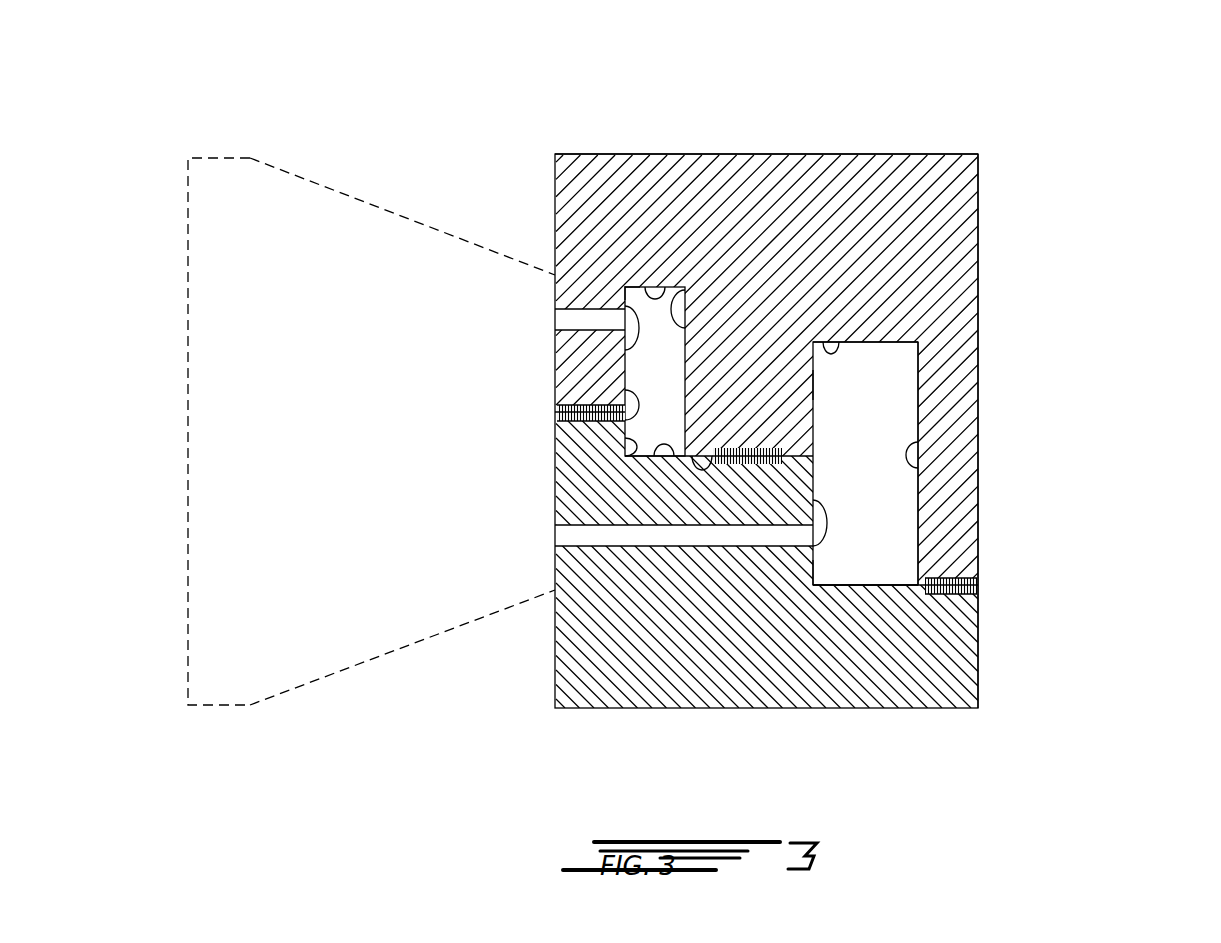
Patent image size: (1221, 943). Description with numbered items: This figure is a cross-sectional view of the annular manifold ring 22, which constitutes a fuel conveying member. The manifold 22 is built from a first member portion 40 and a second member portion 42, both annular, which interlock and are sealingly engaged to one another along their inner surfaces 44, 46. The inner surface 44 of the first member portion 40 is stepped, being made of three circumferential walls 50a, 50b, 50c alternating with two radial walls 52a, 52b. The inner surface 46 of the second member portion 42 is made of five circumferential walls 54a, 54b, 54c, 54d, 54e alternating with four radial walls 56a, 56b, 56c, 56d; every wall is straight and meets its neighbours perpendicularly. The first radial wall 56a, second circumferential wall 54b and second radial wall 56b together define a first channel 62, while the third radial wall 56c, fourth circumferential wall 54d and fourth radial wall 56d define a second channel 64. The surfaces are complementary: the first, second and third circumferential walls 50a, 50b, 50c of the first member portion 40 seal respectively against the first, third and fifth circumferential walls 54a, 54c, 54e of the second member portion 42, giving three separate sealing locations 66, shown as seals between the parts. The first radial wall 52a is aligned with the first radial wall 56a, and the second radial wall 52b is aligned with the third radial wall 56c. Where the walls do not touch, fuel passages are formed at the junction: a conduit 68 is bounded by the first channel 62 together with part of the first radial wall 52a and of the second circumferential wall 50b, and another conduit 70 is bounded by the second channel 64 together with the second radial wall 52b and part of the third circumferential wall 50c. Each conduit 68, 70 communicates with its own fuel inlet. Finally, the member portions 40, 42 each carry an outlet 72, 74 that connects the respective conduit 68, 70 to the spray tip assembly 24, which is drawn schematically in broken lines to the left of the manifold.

The manifold ring 22 is at (1003, 198).
The spray tip assembly 24 is at (275, 195).
The first member portion 40 is at (928, 688).
The second member portion 42 is at (903, 170).
The inner surface of first member portion 44 is at (891, 580).
The inner surface of second member portion 46 is at (893, 350).
The first circumferential wall 50a is at (560, 402).
The second circumferential wall 50b is at (664, 458).
The third circumferential wall 50c is at (862, 585).
The first radial wall 52a is at (626, 456).
The second radial wall 52b is at (813, 586).
The first circumferential wall 54a is at (622, 395).
The second circumferential wall 54b is at (660, 285).
The third circumferential wall 54c is at (723, 456).
The fourth circumferential wall 54d is at (834, 340).
The fifth circumferential wall 54e is at (968, 580).
The first radial wall 56a is at (623, 308).
The second radial wall 56b is at (700, 276).
The third radial wall 56c is at (818, 390).
The fourth radial wall 56d is at (930, 448).
The first channel 62 is at (636, 306).
The second channel 64 is at (893, 398).
The sealing locations 66 is at (586, 420).
The conduit 68 is at (674, 380).
The conduit 70 is at (884, 463).
The outlet 72 is at (572, 318).
The outlet 74 is at (686, 548).